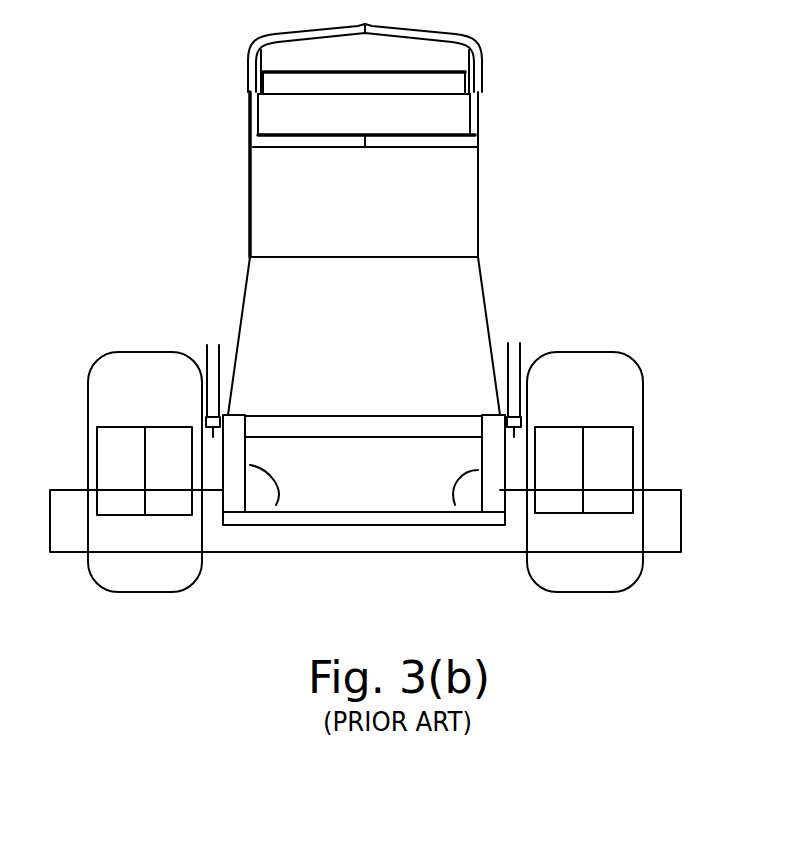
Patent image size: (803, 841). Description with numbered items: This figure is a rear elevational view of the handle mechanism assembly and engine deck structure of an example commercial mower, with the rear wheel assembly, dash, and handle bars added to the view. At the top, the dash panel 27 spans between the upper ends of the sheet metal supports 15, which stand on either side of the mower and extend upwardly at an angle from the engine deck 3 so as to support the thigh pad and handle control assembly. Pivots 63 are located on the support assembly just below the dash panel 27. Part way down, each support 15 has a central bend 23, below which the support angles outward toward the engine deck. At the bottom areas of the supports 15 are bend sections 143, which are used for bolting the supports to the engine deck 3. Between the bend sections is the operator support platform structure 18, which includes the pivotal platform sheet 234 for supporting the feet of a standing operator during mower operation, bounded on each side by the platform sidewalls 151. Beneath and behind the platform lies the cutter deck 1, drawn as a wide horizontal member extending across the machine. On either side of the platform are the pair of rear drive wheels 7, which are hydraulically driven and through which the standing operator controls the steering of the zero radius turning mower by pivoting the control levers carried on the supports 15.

The cutter deck 1 is at (658, 510).
The engine deck 3 is at (337, 422).
The rear drive wheels 7 is at (129, 372).
The support assembly 15 is at (250, 207).
The operator support platform structure 18 is at (395, 511).
The central bends 23 is at (243, 255).
The dash panel 27 is at (427, 83).
The pivots 63 is at (302, 142).
The bend sections 143 is at (236, 412).
The platform sidewalls 151 is at (276, 505).
The pivotal platform sheet 234 is at (362, 511).